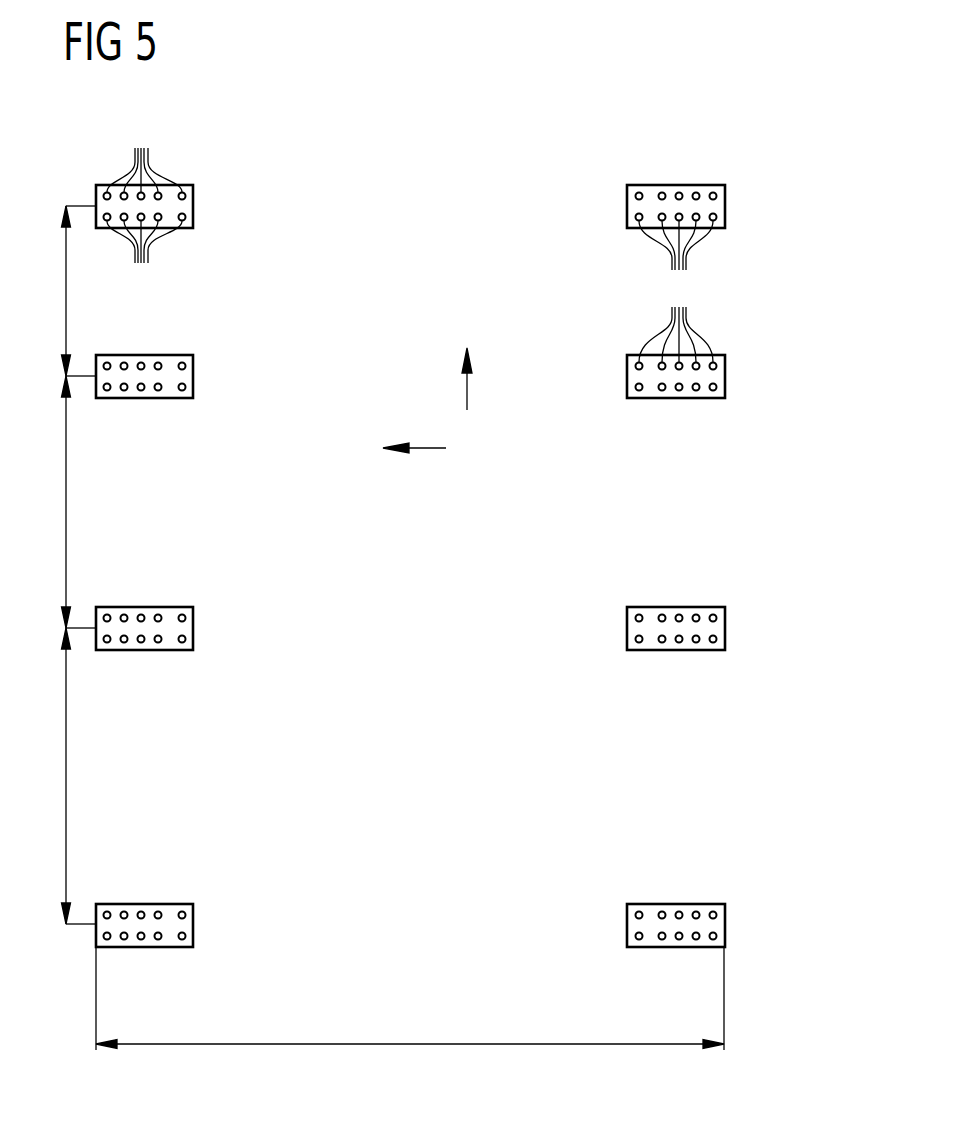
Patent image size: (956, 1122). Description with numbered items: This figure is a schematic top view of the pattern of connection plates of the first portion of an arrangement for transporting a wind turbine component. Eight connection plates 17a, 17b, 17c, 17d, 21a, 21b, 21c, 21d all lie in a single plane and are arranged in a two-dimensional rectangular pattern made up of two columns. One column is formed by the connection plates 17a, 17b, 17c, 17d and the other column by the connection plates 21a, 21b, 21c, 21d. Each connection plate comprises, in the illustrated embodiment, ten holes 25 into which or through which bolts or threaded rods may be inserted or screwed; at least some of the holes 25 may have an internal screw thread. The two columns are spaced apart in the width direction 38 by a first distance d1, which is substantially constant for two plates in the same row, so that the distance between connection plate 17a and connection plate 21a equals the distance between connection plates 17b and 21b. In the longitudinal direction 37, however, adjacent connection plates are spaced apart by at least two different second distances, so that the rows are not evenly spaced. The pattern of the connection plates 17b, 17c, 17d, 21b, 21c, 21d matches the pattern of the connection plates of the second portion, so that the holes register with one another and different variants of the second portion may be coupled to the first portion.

The connection plate 17a is at (725, 206).
The connection plate 17b is at (725, 376).
The connection plate 17c is at (725, 628).
The connection plate 17d is at (725, 923).
The connection plate 21a is at (193, 206).
The connection plate 21b is at (193, 376).
The connection plate 21c is at (193, 628).
The connection plate 21d is at (193, 923).
The hole 25 is at (410, 237).
The longitudinal direction 37 is at (467, 390).
The width direction 38 is at (426, 448).
The first distance d1 is at (409, 1044).